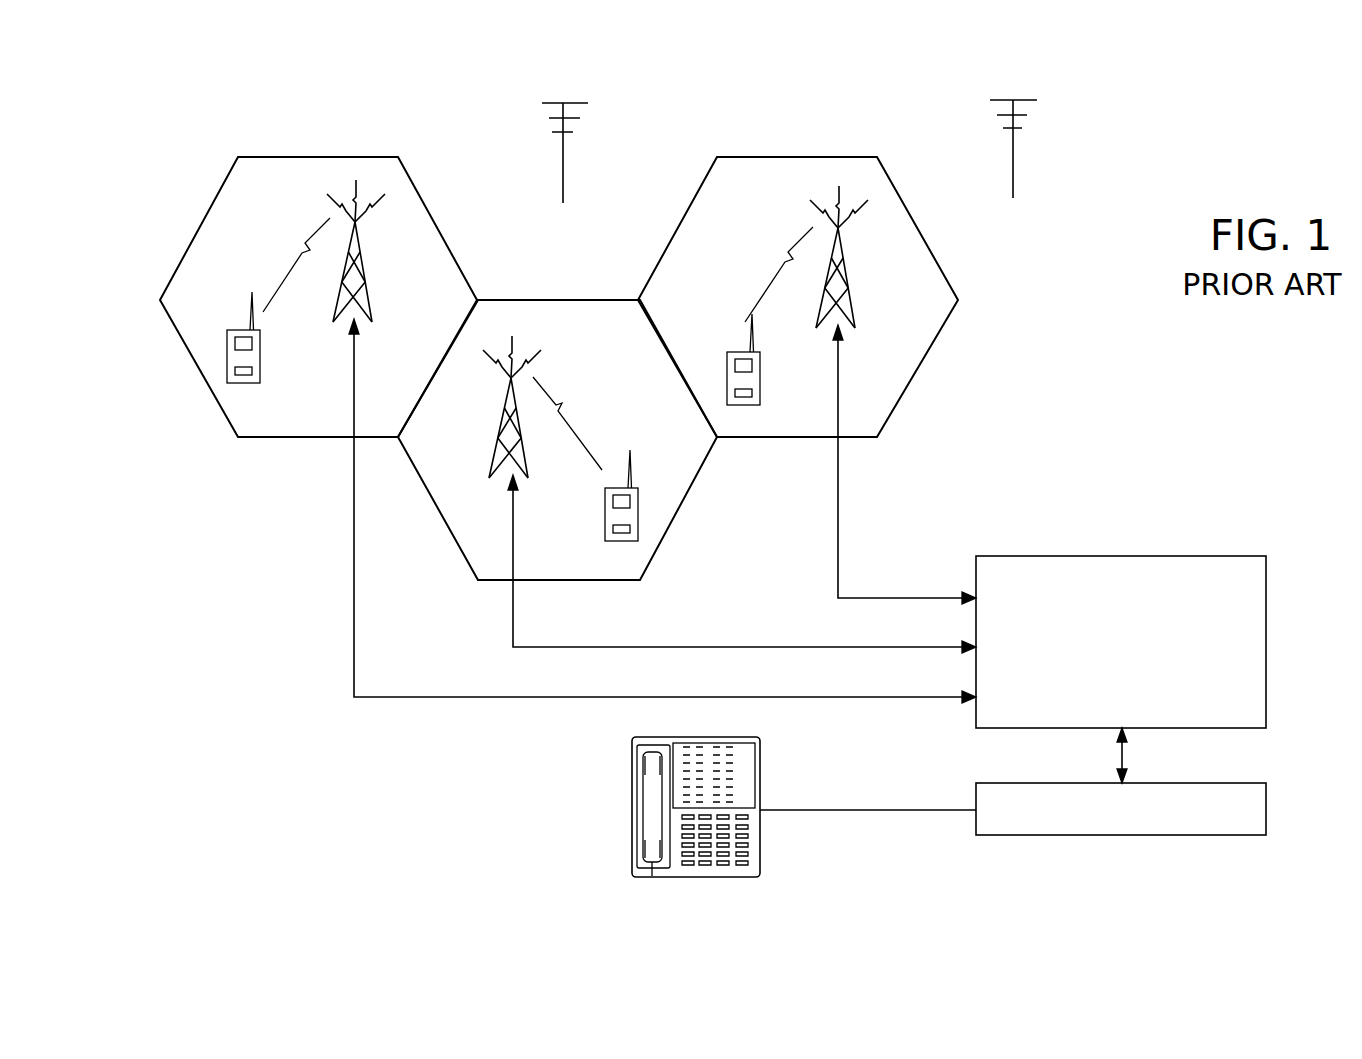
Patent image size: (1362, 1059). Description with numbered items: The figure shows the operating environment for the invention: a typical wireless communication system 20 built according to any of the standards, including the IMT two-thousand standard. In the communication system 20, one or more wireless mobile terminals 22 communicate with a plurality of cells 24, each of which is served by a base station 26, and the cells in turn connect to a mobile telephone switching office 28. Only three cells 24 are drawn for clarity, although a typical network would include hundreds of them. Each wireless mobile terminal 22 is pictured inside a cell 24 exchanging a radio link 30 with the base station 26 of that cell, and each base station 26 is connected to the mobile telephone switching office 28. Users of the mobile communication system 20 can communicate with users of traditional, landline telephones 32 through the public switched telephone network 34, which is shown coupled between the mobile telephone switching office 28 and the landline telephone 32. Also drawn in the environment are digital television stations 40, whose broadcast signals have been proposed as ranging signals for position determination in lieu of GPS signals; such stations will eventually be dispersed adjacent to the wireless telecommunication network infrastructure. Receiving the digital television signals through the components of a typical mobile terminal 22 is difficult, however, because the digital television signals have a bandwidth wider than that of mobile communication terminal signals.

The communication system 20 is at (1012, 245).
The wireless mobile terminal 22 is at (230, 330).
The cell 24 is at (362, 157).
The base station 26 is at (378, 258).
The mobile telephone switching office 28 is at (1228, 556).
The radio link 30 is at (272, 255).
The landline telephone 32 is at (630, 780).
The public switched telephone network 34 is at (1200, 835).
The digital television station 40 is at (572, 103).